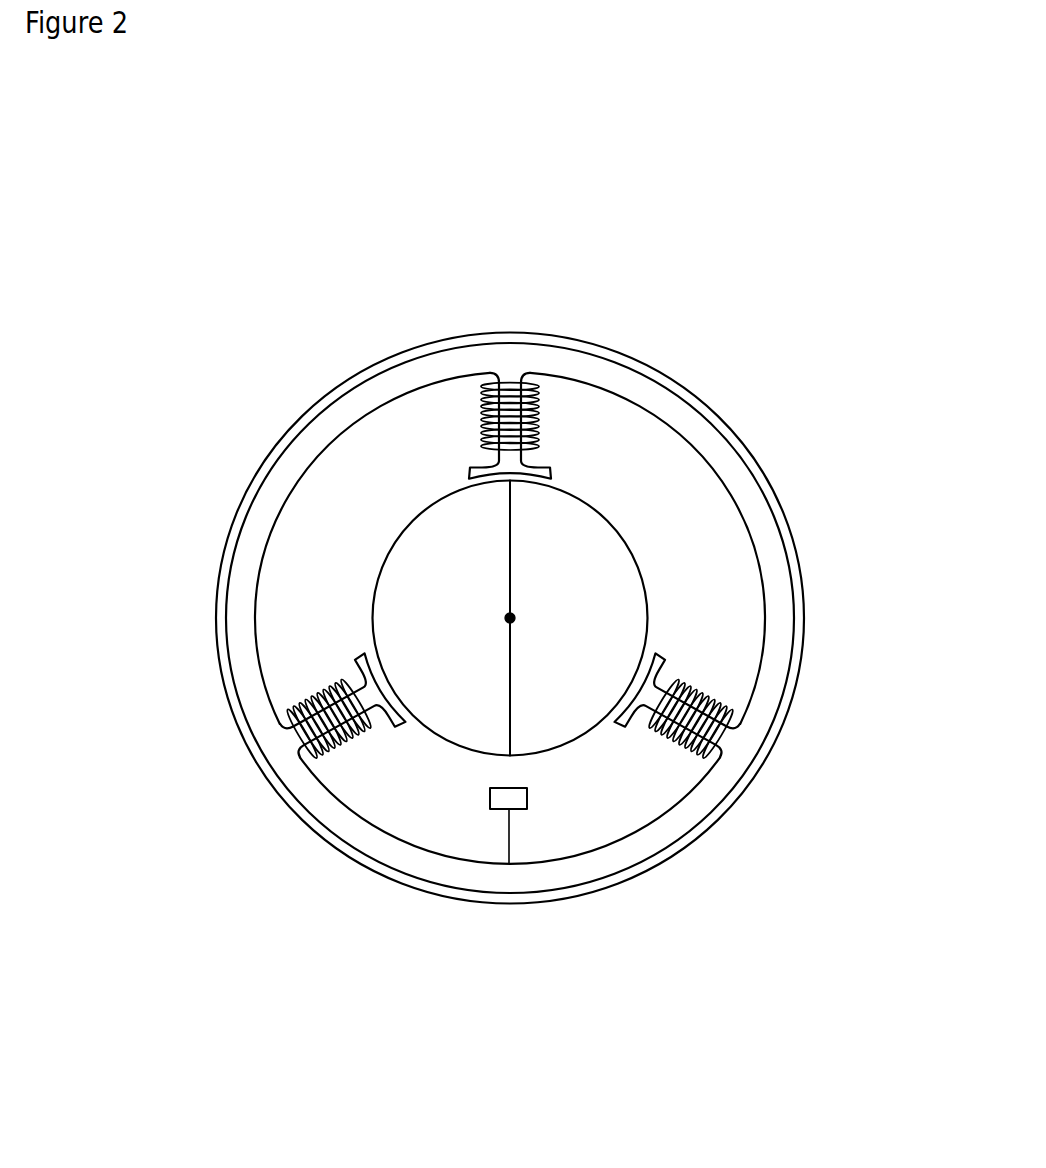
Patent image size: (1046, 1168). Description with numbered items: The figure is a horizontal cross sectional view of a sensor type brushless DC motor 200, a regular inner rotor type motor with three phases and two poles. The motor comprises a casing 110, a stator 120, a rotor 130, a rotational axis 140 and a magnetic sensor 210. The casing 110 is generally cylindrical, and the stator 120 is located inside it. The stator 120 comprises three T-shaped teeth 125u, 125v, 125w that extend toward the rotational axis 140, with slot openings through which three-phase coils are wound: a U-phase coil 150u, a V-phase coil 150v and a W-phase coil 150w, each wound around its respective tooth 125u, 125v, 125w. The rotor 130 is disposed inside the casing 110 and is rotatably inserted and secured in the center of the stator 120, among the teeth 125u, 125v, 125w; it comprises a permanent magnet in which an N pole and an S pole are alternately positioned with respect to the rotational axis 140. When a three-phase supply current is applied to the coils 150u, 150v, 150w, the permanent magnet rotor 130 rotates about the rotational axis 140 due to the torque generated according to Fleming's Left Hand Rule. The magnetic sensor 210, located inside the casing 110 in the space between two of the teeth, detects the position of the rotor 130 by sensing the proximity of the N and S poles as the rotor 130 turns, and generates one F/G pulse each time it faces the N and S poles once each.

The sensor type brushless DC motor 200 is at (721, 178).
The casing 110 is at (618, 885).
The stator 120 is at (662, 400).
The T-shaped tooth 125u is at (483, 455).
The T-shaped tooth 125v is at (652, 683).
The T-shaped tooth 125w is at (363, 683).
The rotor 130 is at (370, 539).
The rotational axis 140 is at (512, 616).
The U-phase coil 150u is at (479, 453).
The V-phase coil 150v is at (680, 678).
The W-phase coil 150w is at (371, 730).
The magnetic sensor 210 is at (490, 807).